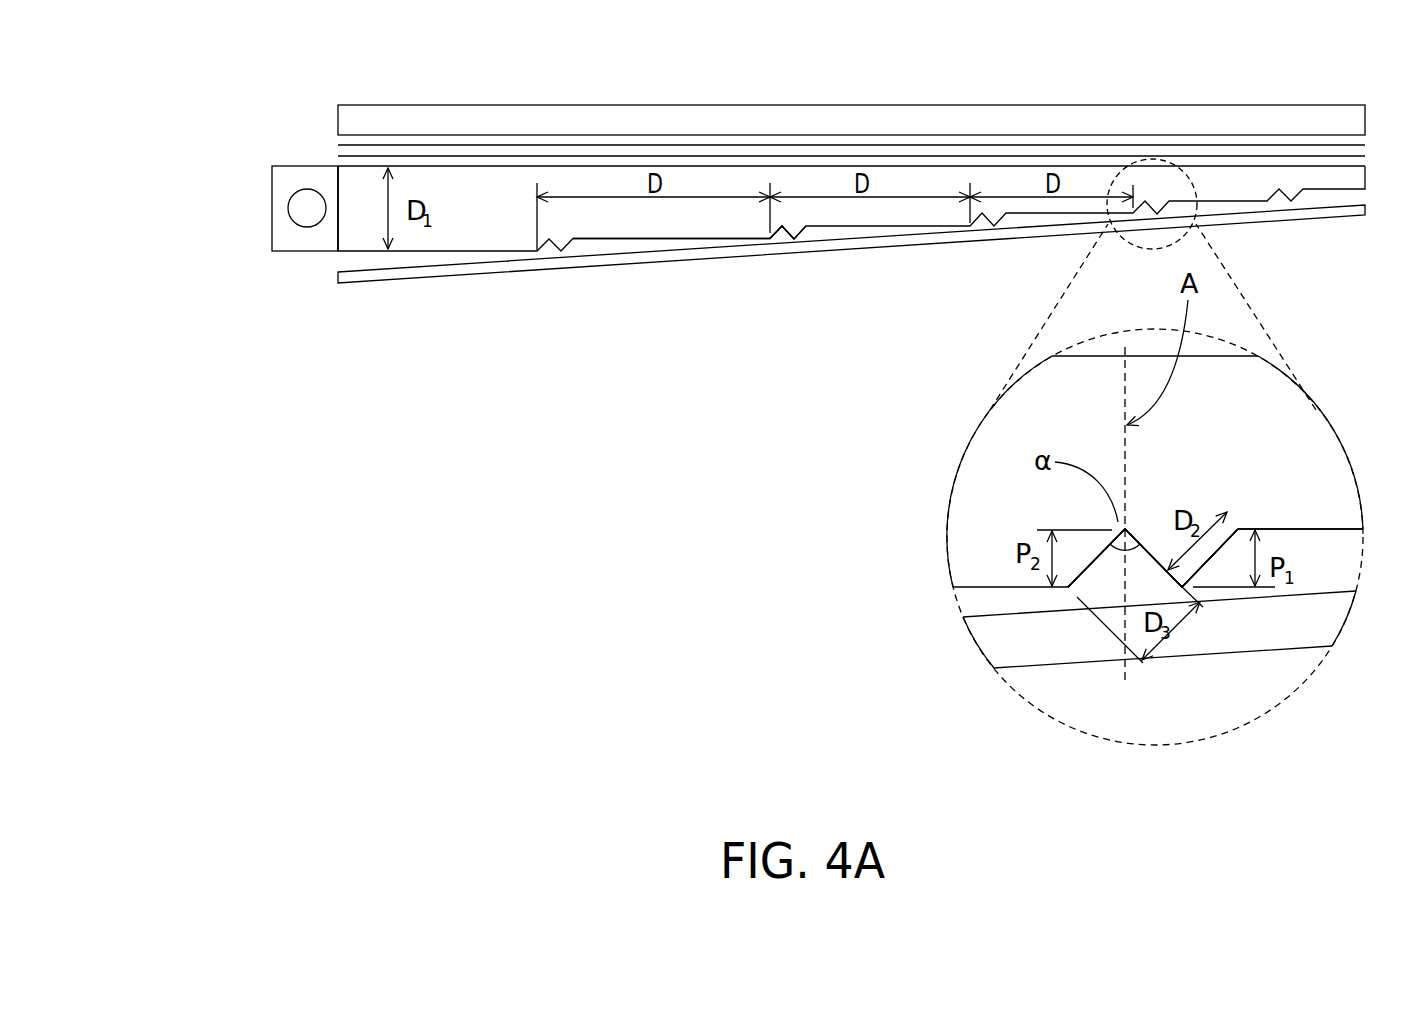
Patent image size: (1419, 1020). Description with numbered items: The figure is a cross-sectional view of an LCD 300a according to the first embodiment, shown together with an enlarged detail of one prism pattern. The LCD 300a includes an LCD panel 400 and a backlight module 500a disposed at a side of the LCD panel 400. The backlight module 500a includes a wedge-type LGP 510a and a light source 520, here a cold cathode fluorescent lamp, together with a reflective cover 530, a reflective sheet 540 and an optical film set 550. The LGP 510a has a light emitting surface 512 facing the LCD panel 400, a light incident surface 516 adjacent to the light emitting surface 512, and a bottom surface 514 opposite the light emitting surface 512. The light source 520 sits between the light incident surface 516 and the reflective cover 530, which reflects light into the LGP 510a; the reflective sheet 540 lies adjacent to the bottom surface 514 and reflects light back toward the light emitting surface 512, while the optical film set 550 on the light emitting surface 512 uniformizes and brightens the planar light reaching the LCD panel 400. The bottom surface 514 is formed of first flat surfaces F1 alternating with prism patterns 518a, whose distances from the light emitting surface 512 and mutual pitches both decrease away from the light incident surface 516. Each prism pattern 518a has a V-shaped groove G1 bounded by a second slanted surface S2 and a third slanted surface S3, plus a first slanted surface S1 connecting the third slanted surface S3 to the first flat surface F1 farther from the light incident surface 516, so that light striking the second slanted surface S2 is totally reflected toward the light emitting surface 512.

The LCD panel 400 is at (932, 122).
The LCD 300a is at (878, 526).
The backlight module 500a is at (182, 123).
The optical film set 550 is at (320, 142).
The reflective cover 530 is at (273, 208).
The light source 520 is at (303, 197).
The LGP 510a is at (352, 240).
The light emitting surface 512 is at (762, 165).
The light incident surface 516 is at (339, 191).
The reflective sheet 540 is at (333, 280).
The bottom surface 514 is at (838, 373).
The prism pattern 518a is at (788, 240).
The first flat surface F1 is at (725, 241).
The groove G1 is at (1088, 781).
The first slanted surface S1 is at (1210, 569).
The second slanted surface S2 is at (1094, 569).
The third slanted surface S3 is at (1159, 569).